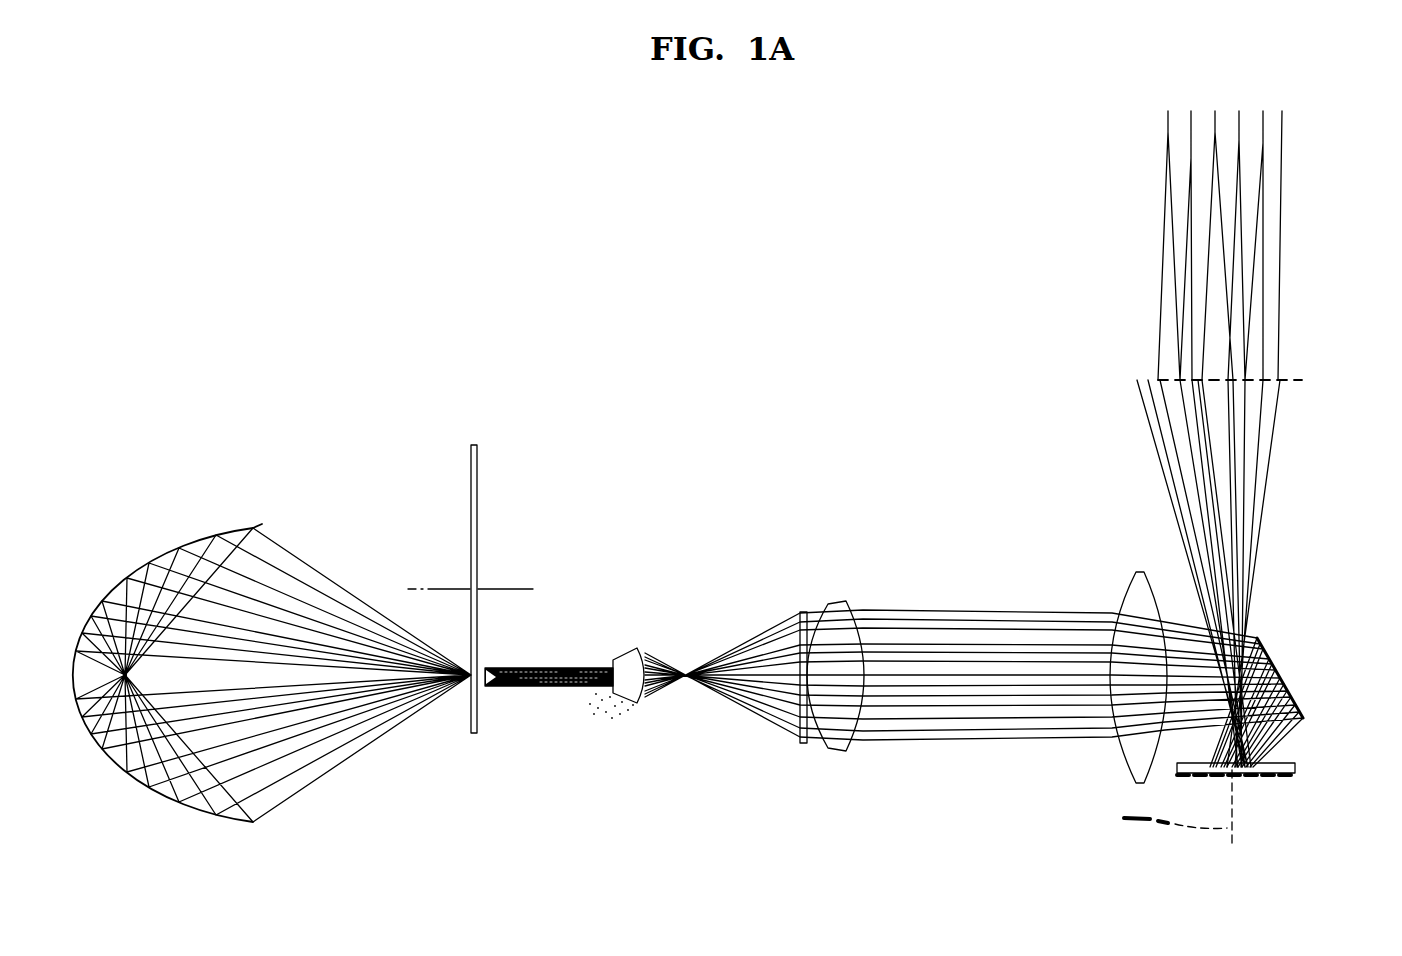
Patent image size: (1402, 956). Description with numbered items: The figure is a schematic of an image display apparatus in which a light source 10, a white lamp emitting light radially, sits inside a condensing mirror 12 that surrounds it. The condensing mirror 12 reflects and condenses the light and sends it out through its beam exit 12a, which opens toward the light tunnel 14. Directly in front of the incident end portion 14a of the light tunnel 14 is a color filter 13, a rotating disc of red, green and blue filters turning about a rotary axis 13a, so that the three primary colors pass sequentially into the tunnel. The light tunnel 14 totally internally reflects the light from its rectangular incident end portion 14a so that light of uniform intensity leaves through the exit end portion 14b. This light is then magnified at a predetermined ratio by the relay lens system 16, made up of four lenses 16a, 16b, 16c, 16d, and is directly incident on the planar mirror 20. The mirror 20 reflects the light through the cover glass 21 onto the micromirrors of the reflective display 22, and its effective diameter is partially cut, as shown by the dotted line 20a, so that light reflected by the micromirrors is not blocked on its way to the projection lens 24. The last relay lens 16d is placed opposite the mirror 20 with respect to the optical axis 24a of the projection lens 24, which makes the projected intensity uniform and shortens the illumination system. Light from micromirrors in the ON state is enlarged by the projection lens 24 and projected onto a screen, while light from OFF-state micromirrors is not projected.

The light source 10 is at (76, 655).
The condensing mirror 12 is at (212, 686).
The beam exit 12a is at (258, 529).
The color filter 13 is at (478, 470).
The rotary axis 13a is at (522, 588).
The light tunnel 14 is at (565, 654).
The incident end portion 14a is at (487, 690).
The exit end portion 14b is at (608, 690).
The relay lens system 16 is at (890, 729).
The relay lens 16a is at (634, 703).
The relay lens 16b is at (805, 746).
The relay lens 16c is at (838, 752).
The relay lens 16d is at (1060, 696).
The mirror 20 is at (1323, 654).
The cut portion of mirror effective diameter 20a is at (1256, 640).
The cover glass 21 is at (1297, 767).
The reflective display 22 is at (1290, 787).
The projection lens 24 is at (1290, 378).
The optical axis 24a is at (1152, 806).